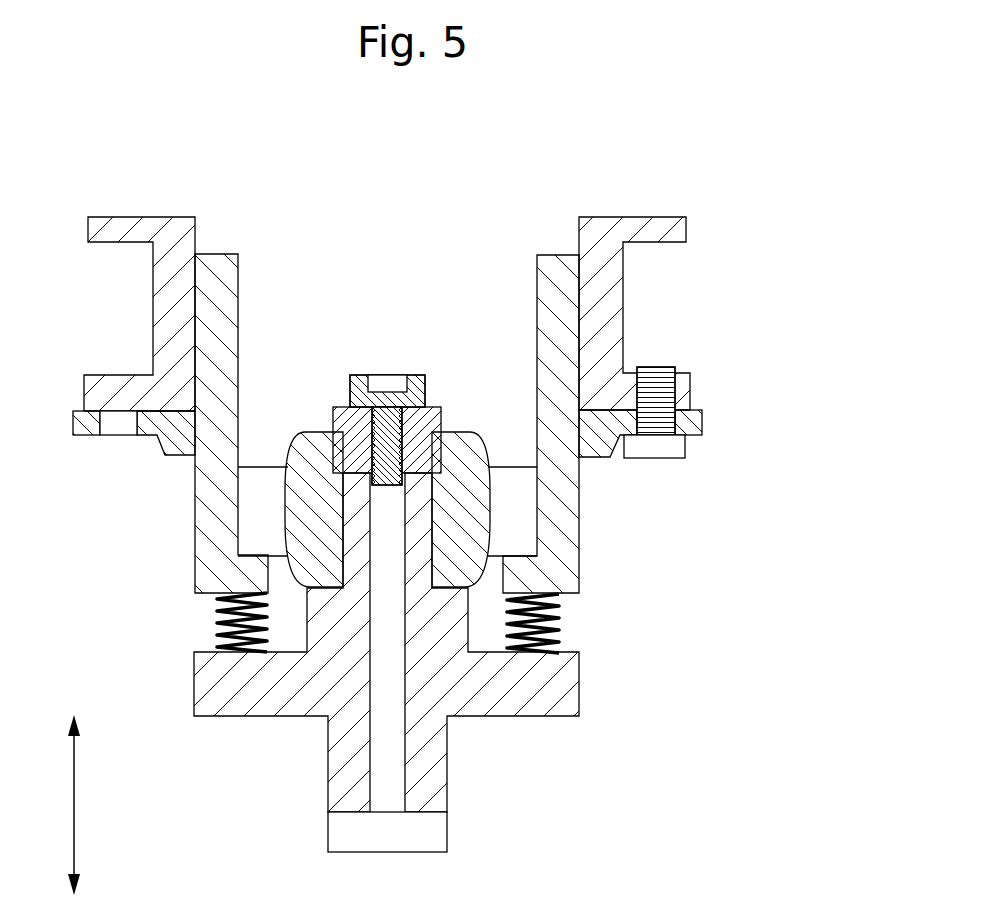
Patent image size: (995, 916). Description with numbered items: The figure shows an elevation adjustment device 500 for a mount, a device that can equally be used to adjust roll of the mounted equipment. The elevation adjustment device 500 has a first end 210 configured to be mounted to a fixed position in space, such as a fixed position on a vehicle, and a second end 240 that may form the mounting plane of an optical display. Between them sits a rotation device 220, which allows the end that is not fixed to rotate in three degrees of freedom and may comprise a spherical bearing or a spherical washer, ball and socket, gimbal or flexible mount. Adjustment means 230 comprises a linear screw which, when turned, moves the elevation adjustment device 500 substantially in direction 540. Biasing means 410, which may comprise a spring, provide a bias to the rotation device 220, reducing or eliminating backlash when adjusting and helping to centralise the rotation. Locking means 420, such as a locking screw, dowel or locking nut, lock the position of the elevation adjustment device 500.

The elevation adjustment device 500 is at (704, 160).
The first end 210 is at (623, 225).
The rotation device 220 is at (468, 500).
The adjustment means 230 is at (362, 380).
The second end 240 is at (352, 830).
The biasing means 410 is at (217, 620).
The locking means 420 is at (120, 430).
The direction 540 is at (74, 815).